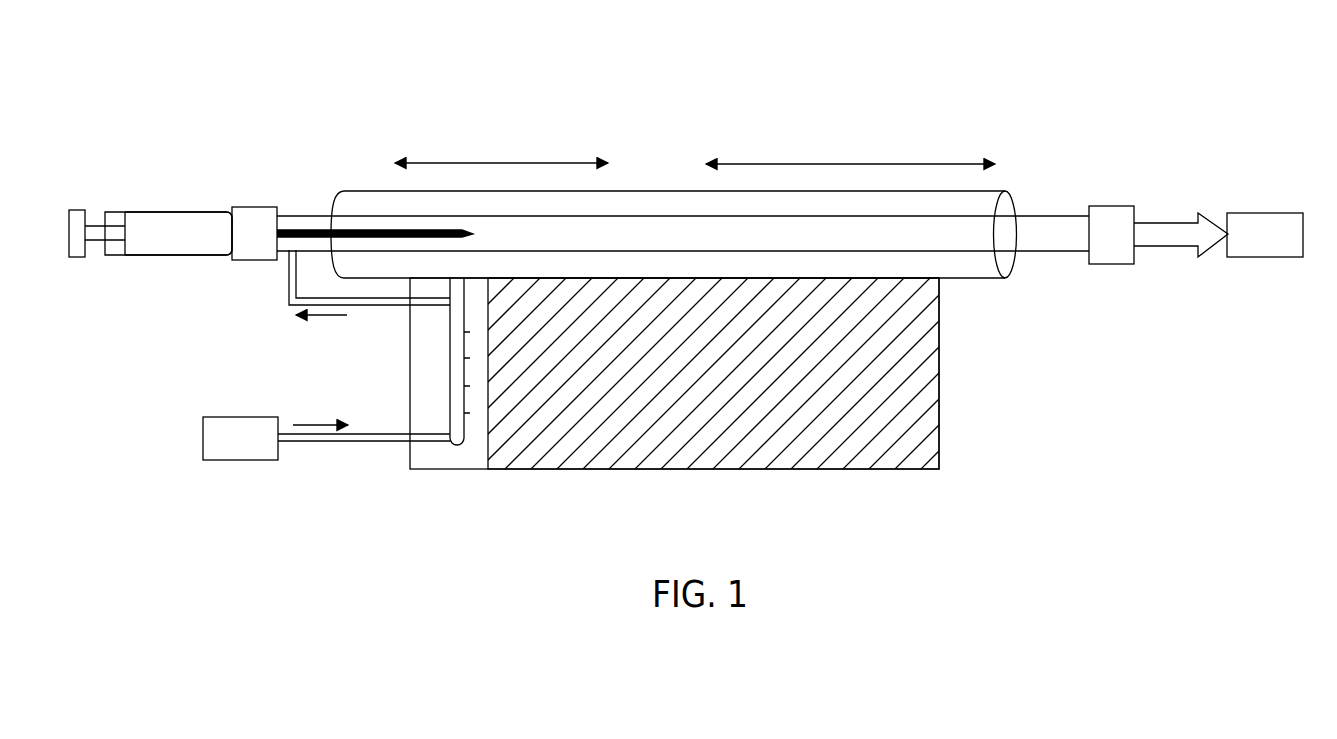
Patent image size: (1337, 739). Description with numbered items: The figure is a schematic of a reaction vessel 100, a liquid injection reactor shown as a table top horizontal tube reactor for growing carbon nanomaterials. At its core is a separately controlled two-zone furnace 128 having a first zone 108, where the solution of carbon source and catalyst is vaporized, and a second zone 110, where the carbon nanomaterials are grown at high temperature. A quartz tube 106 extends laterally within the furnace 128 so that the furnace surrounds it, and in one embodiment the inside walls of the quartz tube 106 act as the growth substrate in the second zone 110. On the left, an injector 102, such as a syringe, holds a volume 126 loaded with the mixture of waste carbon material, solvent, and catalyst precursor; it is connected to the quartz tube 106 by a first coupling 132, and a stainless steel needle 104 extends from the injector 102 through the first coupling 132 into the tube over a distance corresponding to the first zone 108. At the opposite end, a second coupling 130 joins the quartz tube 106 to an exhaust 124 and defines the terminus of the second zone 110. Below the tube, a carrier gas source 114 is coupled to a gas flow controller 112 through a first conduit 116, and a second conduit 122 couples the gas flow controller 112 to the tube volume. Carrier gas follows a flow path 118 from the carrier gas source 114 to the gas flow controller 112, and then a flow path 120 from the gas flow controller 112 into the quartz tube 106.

The reaction vessel 100 is at (235, 78).
The injector 102 is at (151, 260).
The needle 104 is at (292, 216).
The quartz tube 106 is at (1052, 216).
The first zone 108 is at (501, 162).
The second zone 110 is at (842, 164).
The gas flow controller 112 is at (438, 470).
The carrier gas source 114 is at (222, 451).
The first conduit 116 is at (364, 443).
The flow path 118 is at (306, 425).
The flow path 120 is at (325, 317).
The second conduit 122 is at (282, 284).
The exhaust 124 is at (1283, 247).
The volume 126 is at (176, 218).
The two-zone furnace 128 is at (635, 191).
The second coupling 130 is at (1112, 206).
The first coupling 132 is at (247, 207).